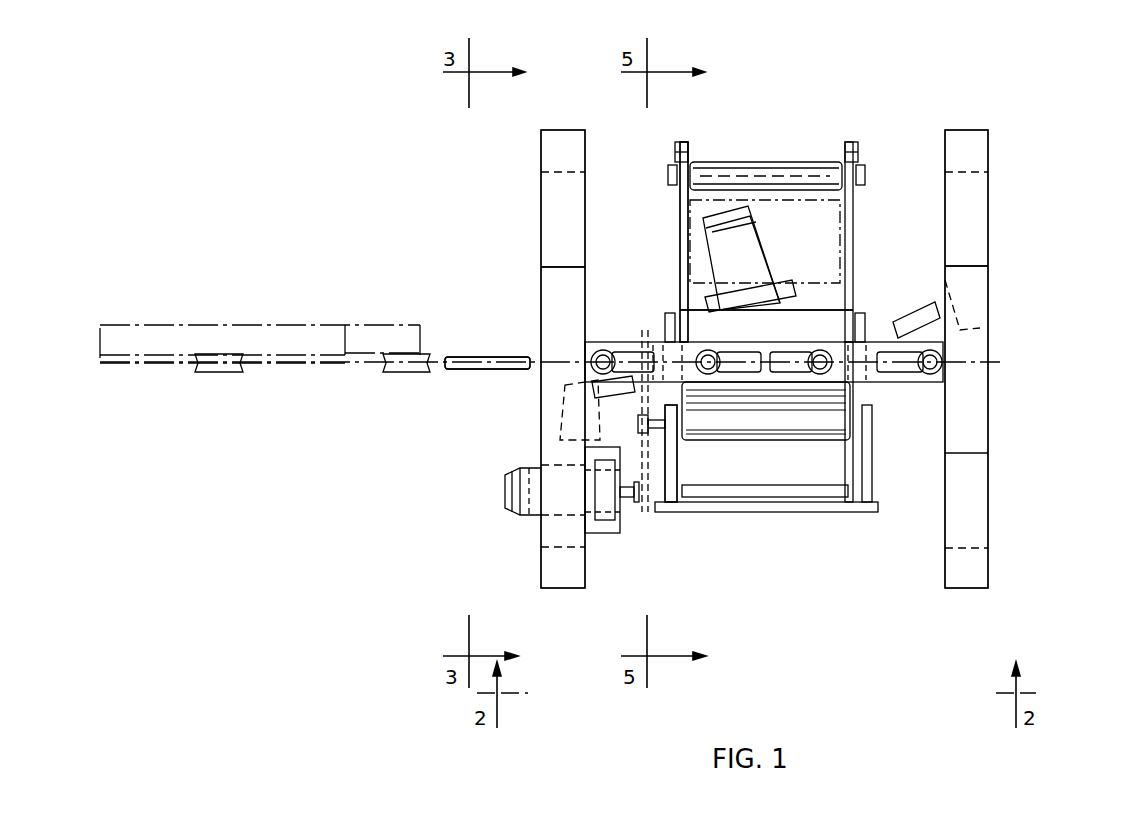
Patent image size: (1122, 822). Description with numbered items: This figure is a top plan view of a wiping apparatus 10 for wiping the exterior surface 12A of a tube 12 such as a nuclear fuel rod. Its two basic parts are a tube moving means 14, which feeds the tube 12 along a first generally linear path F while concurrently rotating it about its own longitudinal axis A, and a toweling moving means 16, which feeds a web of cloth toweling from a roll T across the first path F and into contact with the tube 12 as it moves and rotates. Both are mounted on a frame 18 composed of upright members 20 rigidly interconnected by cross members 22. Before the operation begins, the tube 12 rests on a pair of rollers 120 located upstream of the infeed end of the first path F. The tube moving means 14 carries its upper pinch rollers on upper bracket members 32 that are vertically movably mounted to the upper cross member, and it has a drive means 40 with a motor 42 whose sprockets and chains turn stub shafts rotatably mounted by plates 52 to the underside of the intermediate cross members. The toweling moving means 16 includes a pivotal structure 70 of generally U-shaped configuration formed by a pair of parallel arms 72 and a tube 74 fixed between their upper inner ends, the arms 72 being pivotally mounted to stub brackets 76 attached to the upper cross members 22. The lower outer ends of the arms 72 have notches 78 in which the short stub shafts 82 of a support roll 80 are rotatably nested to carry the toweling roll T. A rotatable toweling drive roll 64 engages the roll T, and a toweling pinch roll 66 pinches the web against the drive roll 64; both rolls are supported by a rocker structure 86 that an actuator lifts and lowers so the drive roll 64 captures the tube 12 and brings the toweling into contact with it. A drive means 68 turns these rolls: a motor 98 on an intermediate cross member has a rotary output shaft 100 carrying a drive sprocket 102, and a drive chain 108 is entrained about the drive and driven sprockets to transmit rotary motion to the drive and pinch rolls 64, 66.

The wiping apparatus 10 is at (1020, 122).
The tube 12 is at (462, 372).
The exterior surface 12A is at (498, 357).
The tube moving means 14 is at (880, 330).
The toweling moving means 16 is at (818, 515).
The frame 18 is at (992, 452).
The upright members 20 is at (560, 150).
The cross members 22 is at (545, 262).
The upper bracket members 32 is at (690, 345).
The drive means 40 is at (775, 245).
The motor 42 is at (735, 215).
The plates 52 is at (600, 432).
The toweling drive roll 64 is at (822, 405).
The toweling pinch roll 66 is at (758, 440).
The drive means 68 is at (645, 512).
The pivotal structure 70 is at (672, 210).
The arms 72 is at (680, 252).
The tube 74 is at (820, 305).
The stub brackets 76 is at (670, 312).
The notches 78 is at (681, 158).
The support roll 80 is at (720, 168).
The stub shafts 82 is at (668, 175).
The rocker structure 86 is at (696, 514).
The motor 98 is at (507, 500).
The rotary output shaft 100 is at (628, 505).
The drive sprocket 102 is at (640, 435).
The drive chain 108 is at (690, 460).
The rollers 120 is at (238, 372).
The longitudinal axis A is at (490, 370).
The first path F is at (1000, 362).
The toweling roll T is at (690, 232).